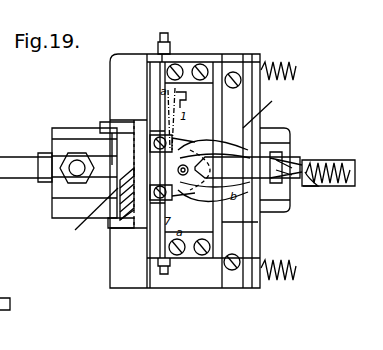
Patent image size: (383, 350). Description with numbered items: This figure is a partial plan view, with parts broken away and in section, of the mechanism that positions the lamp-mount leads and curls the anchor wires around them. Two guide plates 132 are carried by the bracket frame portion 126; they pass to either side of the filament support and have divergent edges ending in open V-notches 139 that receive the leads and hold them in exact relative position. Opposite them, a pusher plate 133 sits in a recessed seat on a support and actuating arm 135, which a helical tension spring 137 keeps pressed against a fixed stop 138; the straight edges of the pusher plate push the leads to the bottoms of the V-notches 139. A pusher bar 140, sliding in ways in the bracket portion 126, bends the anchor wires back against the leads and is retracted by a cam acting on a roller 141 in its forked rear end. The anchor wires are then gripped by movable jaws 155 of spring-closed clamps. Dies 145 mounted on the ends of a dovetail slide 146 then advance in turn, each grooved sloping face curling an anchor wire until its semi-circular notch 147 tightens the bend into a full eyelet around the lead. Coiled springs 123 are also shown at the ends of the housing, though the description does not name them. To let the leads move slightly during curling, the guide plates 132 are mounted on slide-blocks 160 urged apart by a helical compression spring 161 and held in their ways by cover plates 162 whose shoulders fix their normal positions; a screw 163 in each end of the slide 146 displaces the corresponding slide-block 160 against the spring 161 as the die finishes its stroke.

The spring 123 is at (273, 272).
The bracket frame portion 126 is at (112, 286).
The guide plates 132 is at (222, 190).
The pusher plate 133 is at (258, 128).
The support and actuating arm 135 is at (288, 157).
The helical tension spring 137 is at (335, 165).
The fixed stop 138 is at (332, 180).
The V-notches 139 is at (192, 208).
The pusher bar 140 is at (48, 178).
The roller 141 is at (36, 158).
The dies 145 is at (160, 108).
The dovetail slide 146 is at (260, 226).
The semi-circular notch 147 is at (188, 102).
The movable jaws 155 is at (70, 186).
The slide-blocks 160 is at (118, 230).
The helical compression spring 161 is at (90, 222).
The cover plates 162 is at (147, 230).
The screw 163 is at (164, 274).